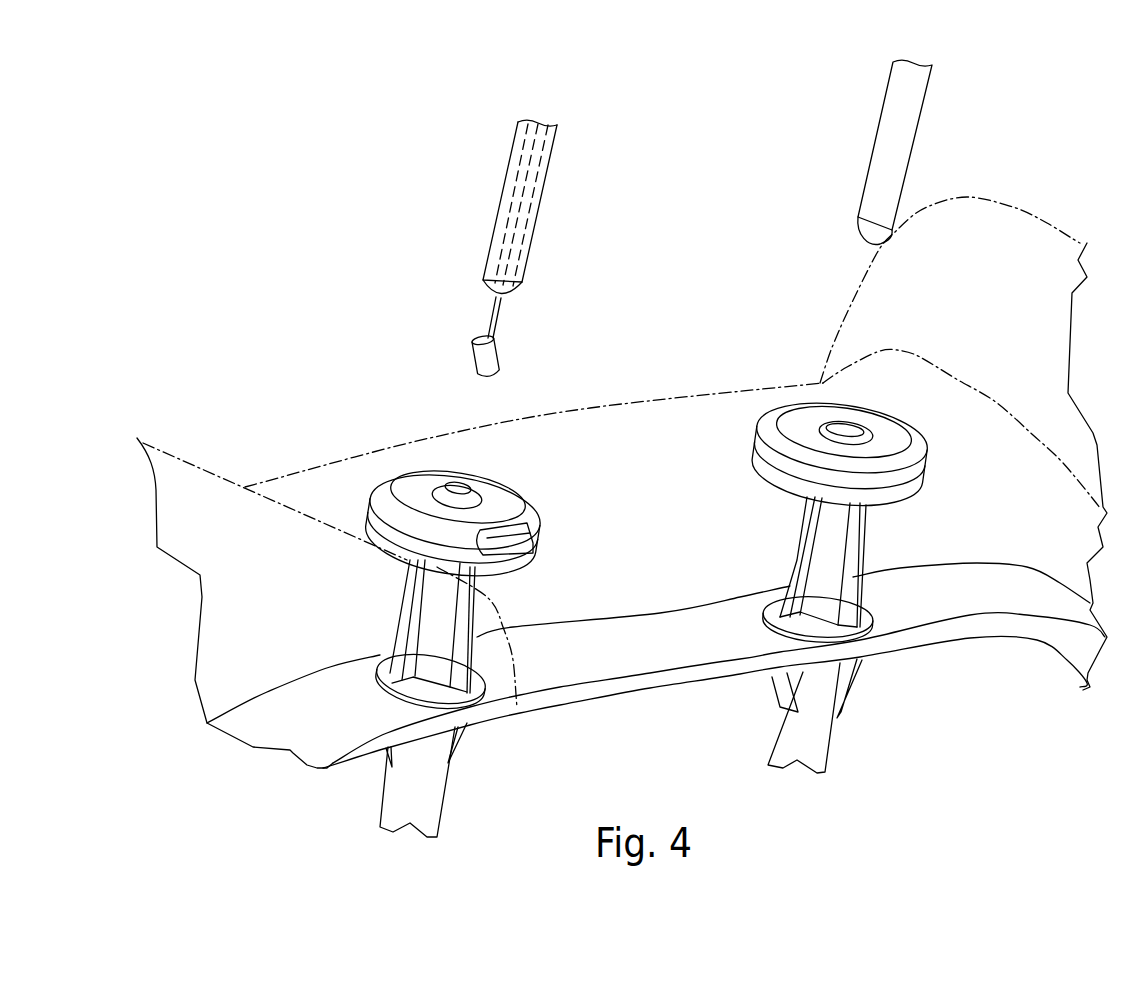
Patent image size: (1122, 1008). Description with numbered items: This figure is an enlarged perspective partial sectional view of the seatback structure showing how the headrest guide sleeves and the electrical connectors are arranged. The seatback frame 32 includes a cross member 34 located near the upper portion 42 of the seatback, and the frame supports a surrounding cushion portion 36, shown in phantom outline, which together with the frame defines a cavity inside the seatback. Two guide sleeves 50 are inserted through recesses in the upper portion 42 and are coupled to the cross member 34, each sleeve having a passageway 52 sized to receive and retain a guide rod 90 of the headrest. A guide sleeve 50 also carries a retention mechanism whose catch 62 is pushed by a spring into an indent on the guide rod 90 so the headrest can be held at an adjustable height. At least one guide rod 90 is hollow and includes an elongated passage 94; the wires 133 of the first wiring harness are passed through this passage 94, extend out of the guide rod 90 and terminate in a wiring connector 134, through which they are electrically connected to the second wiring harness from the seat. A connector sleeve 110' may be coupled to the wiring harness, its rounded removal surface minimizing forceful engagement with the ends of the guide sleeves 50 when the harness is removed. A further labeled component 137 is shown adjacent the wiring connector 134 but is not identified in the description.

The seatback frame 32 is at (1043, 637).
The cross member 34 is at (648, 683).
The cushion portion 36 is at (998, 253).
The upper portion of the seatback 42 is at (660, 375).
The guide sleeve 50 is at (505, 495).
The passageway 52 is at (850, 432).
The catch 62 is at (515, 550).
The guide rod 90 is at (535, 180).
The elongated passage 94 is at (543, 123).
The connector sleeve 110' is at (495, 475).
The wires 133 is at (502, 317).
The wiring connector 134 is at (458, 370).
The head 137 is at (473, 353).